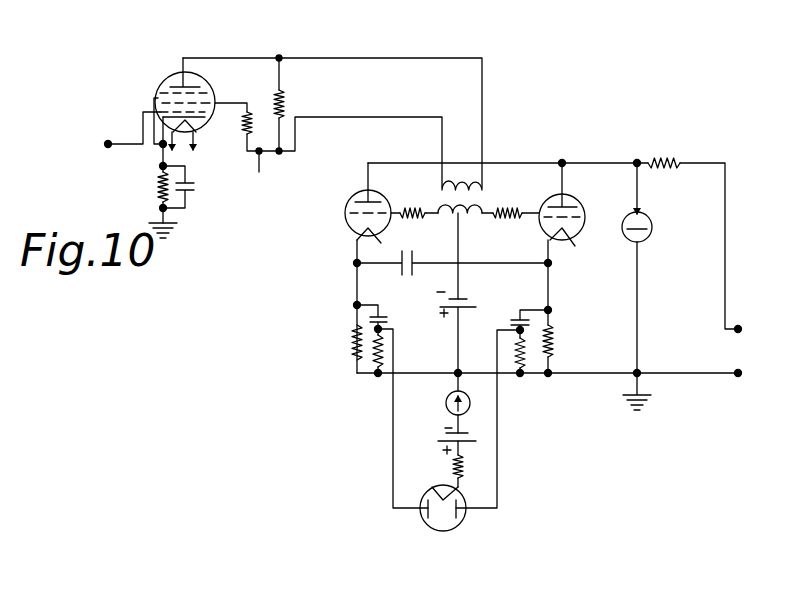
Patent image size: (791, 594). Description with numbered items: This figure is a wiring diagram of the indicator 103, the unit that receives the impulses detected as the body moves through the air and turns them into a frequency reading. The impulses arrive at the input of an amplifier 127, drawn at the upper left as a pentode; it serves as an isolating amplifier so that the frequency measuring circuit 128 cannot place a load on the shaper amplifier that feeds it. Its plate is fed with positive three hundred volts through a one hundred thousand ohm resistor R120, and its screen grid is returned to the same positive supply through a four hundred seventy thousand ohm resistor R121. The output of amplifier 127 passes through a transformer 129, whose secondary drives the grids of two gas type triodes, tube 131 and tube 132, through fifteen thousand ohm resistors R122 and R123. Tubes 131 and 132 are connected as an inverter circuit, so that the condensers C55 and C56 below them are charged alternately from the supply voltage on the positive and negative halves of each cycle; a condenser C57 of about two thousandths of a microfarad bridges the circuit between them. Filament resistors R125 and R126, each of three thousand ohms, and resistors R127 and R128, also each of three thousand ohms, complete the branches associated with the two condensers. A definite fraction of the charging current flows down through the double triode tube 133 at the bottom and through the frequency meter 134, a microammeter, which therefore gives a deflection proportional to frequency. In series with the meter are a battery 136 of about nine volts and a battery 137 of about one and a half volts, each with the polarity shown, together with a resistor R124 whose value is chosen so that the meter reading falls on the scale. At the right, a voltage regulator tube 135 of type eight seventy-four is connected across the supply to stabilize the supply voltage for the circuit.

The indicator 103 is at (272, 38).
The amplifier 127 is at (166, 79).
The frequency measuring circuit 128 is at (322, 316).
The transformer 129 is at (477, 240).
The tube 131 is at (347, 224).
The tube 132 is at (580, 206).
The double triode tube 133 is at (440, 531).
The frequency meter 134 is at (447, 409).
The voltage regulator tube 135 is at (632, 242).
The battery 136 is at (467, 303).
The battery 137 is at (477, 434).
The resistor R120 is at (298, 104).
The resistor R121 is at (261, 122).
The resistor R122 is at (414, 226).
The resistor R123 is at (510, 226).
The resistor R124 is at (473, 464).
The filament resistor R125 is at (336, 343).
The filament resistor R126 is at (567, 341).
The resistor R127 is at (366, 368).
The resistor R128 is at (525, 370).
The condenser C55 is at (389, 320).
The condenser C56 is at (516, 323).
The condenser C57 is at (452, 273).